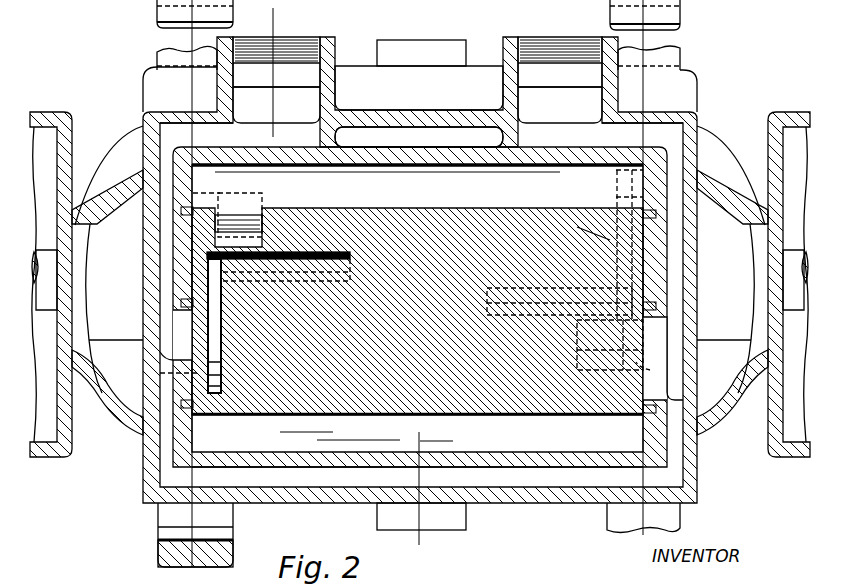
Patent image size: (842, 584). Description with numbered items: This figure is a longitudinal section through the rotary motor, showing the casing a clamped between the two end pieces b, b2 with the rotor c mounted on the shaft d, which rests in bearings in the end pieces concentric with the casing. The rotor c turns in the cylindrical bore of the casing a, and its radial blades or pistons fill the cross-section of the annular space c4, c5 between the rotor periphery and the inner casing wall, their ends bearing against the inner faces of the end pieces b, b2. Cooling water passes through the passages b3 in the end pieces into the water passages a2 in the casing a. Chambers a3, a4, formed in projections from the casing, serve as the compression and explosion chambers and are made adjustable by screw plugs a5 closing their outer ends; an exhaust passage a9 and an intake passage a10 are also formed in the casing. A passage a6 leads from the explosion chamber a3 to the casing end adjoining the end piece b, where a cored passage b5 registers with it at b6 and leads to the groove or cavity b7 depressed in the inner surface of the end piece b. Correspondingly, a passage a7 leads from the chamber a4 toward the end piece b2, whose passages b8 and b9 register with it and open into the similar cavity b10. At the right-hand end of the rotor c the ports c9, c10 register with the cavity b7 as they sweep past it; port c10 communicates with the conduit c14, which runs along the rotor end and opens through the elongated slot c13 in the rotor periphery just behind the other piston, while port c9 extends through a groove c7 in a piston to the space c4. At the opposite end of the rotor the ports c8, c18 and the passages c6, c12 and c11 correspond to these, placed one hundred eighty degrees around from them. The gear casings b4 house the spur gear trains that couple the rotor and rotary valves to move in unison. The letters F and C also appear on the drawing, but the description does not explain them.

The casing a is at (420, 278).
The water passages a2 is at (417, 308).
The explosion chamber a3 is at (560, 101).
The explosion chamber a4 is at (276, 100).
The screw plugs a5 is at (417, 80).
The passage a6 is at (642, 136).
The passage a7 is at (196, 135).
The exhaust passage a9 is at (421, 53).
The intake passage a10 is at (421, 516).
The end piece b is at (430, 270).
The end piece b2 is at (420, 398).
The water passages b3 is at (420, 366).
The gear casings b4 is at (68, 114).
The passage b5 is at (678, 262).
The registering passage b6 is at (694, 117).
The groove or cavity b7 is at (663, 358).
The passage b8 is at (143, 240).
The passage b9 is at (143, 132).
The groove or cavity b10 is at (176, 335).
The rotor c is at (390, 396).
The annular space c4 is at (384, 430).
The annular space c5 is at (387, 187).
The passage c6 is at (248, 222).
The groove c7 is at (602, 372).
The port c8 is at (203, 207).
The port c9 is at (652, 376).
The port c10 is at (617, 193).
The passage c11 is at (310, 250).
The passage c12 is at (217, 288).
The elongated slot c13 is at (540, 312).
The conduit c14 is at (548, 203).
The port c18 is at (172, 380).
The shaft d is at (801, 252).
The fluid inlet F is at (649, 58).
The center line C is at (350, 286).